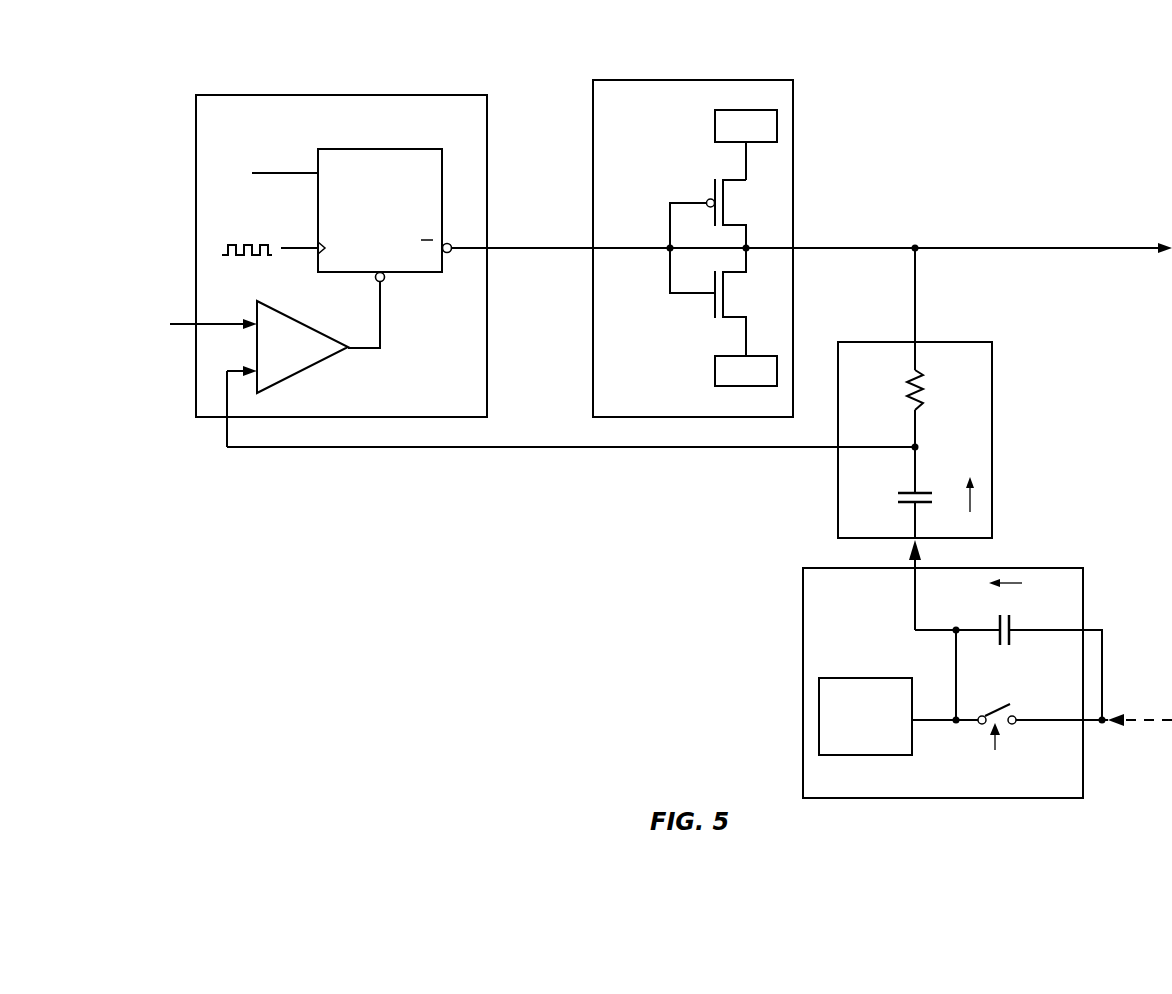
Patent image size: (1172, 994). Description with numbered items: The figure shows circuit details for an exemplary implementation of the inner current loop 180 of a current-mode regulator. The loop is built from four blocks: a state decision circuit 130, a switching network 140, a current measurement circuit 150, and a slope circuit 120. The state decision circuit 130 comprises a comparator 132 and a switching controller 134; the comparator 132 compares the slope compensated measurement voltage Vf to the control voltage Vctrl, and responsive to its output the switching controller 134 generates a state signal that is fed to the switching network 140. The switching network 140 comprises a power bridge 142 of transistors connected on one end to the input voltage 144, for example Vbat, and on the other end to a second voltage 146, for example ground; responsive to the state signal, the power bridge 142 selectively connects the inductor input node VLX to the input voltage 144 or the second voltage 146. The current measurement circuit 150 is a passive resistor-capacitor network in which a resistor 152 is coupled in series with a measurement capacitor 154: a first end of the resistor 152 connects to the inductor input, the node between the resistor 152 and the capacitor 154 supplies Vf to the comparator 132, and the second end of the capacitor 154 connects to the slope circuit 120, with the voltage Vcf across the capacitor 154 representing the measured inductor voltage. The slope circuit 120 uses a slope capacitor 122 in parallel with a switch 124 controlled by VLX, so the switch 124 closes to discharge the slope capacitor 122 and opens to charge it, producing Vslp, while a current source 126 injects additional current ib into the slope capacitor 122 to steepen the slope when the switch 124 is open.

The slope circuit 120 is at (1083, 594).
The slope capacitor 122 is at (1012, 623).
The switch 124 is at (1000, 710).
The current source 126 is at (851, 742).
The state decision circuit 130 is at (393, 95).
The comparator 132 is at (314, 376).
The switching controller 134 is at (410, 149).
The switching network 140 is at (733, 80).
The power bridge 142 is at (690, 318).
The input voltage 144 is at (715, 116).
The second voltage 146 is at (715, 375).
The current measurement circuit 150 is at (945, 342).
The resistor 152 is at (921, 370).
The measurement capacitor 154 is at (920, 490).
The inner current loop 180 is at (1058, 121).